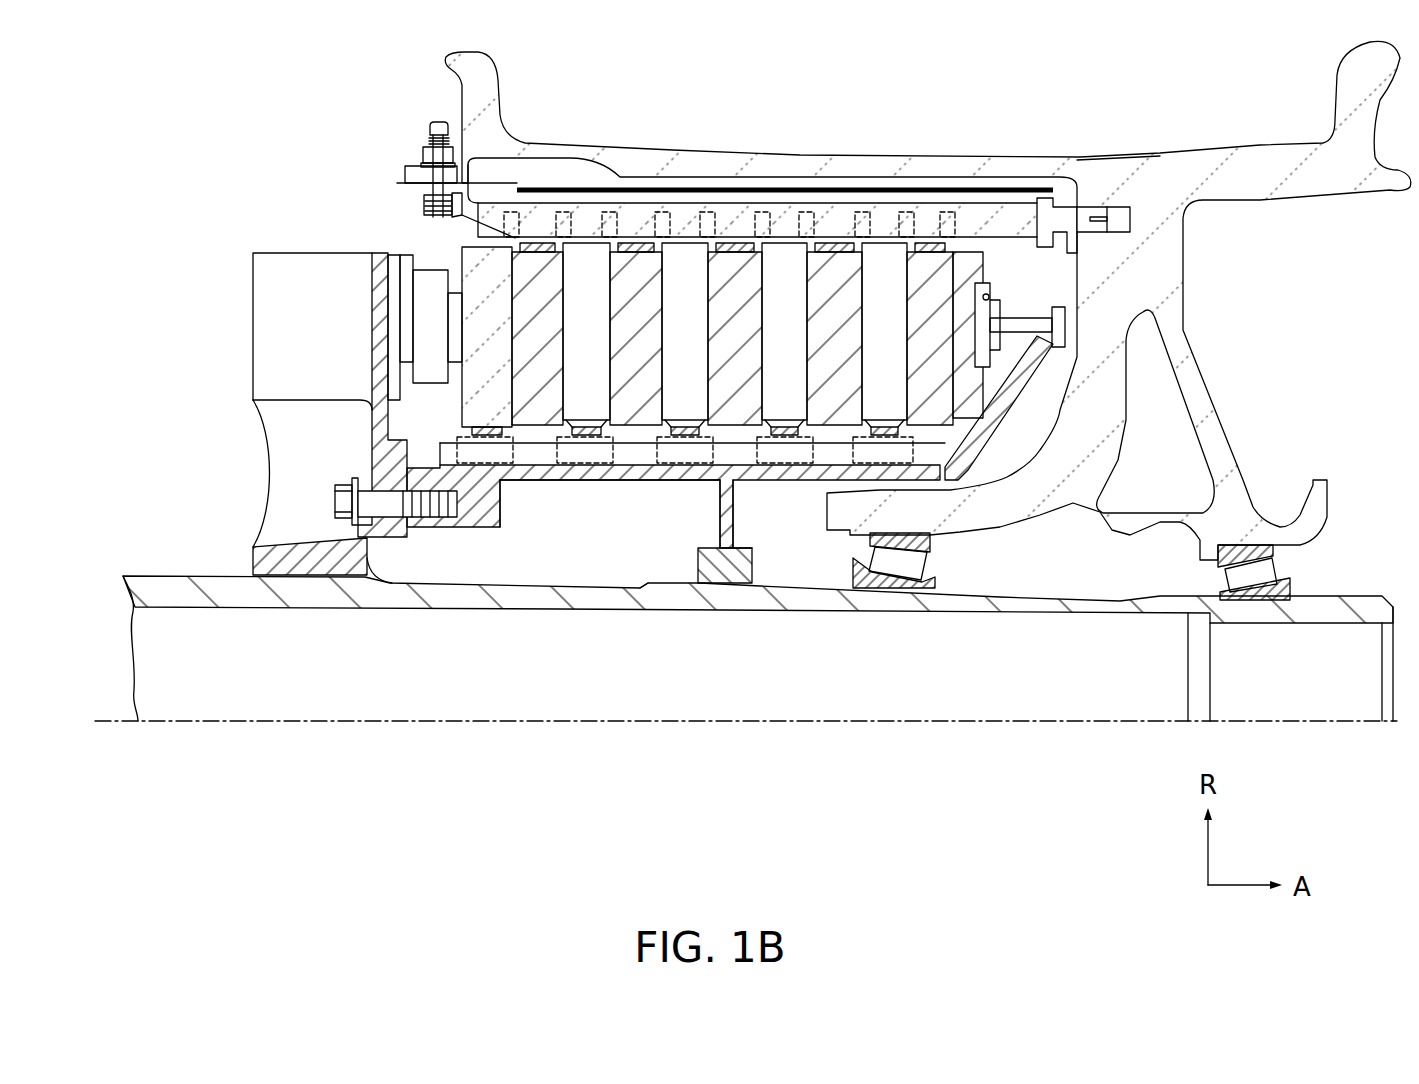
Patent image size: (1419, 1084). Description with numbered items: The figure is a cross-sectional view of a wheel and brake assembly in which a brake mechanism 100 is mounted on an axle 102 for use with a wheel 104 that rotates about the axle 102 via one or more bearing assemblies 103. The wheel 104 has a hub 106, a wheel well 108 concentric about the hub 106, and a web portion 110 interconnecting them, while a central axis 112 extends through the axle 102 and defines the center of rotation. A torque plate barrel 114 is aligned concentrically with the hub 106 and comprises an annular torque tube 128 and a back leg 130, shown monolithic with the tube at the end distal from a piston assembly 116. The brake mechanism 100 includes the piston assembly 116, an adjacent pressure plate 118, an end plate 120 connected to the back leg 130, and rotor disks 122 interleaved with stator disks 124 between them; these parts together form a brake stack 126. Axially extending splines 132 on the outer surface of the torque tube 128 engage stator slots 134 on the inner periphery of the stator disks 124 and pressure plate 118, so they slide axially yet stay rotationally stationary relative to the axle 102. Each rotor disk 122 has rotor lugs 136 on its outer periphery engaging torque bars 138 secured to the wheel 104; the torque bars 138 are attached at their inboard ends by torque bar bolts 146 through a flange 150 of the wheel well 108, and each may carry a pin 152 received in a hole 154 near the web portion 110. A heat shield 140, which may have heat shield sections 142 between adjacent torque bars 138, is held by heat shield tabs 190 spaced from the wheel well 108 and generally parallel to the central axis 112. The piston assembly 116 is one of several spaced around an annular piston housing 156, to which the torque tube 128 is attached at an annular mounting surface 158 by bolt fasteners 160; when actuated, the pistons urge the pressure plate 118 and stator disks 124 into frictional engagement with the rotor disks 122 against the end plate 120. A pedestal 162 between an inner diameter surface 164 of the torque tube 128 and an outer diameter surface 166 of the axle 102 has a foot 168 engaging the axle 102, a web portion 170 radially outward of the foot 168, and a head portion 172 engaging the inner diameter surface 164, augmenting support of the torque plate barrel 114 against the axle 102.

The brake mechanism 100 is at (245, 115).
The axle 102 is at (1050, 618).
The bearing assemblies 103 is at (1262, 566).
The wheel 104 is at (1222, 308).
The hub 106 is at (910, 513).
The wheel well 108 is at (1072, 157).
The web portion 110 is at (1210, 390).
The central axis 112 is at (1002, 725).
The torque plate barrel 114 is at (566, 495).
The piston assembly 116 is at (332, 226).
The pressure plate 118 is at (462, 262).
The end plate 120 is at (985, 265).
The rotor disks 122 is at (540, 268).
The stator disks 124 is at (685, 258).
The brake stack 126 is at (870, 244).
The torque tube 128 is at (517, 483).
The back leg 130 is at (1000, 400).
The splines 132 is at (447, 447).
The stator slots 134 is at (849, 461).
The rotor lugs 136 is at (563, 222).
The torque bars 138 is at (990, 218).
The heat shield 140 is at (728, 187).
The heat shield sections 142 is at (843, 256).
The torque bar bolts 146 is at (430, 120).
The flange 150 is at (408, 170).
The pin 152 is at (1082, 222).
The hole 154 is at (1115, 222).
The annular piston housing 156 is at (253, 262).
The annular mounting surface 158 is at (455, 530).
The bolt fasteners 160 is at (333, 501).
The pedestal 162 is at (705, 519).
The inner diameter surface 164 is at (605, 482).
The outer diameter surface 166 is at (755, 585).
The foot 168 is at (752, 548).
The web portion 170 is at (717, 531).
The head portion 172 is at (718, 481).
The heat shield tabs 190 is at (1060, 250).